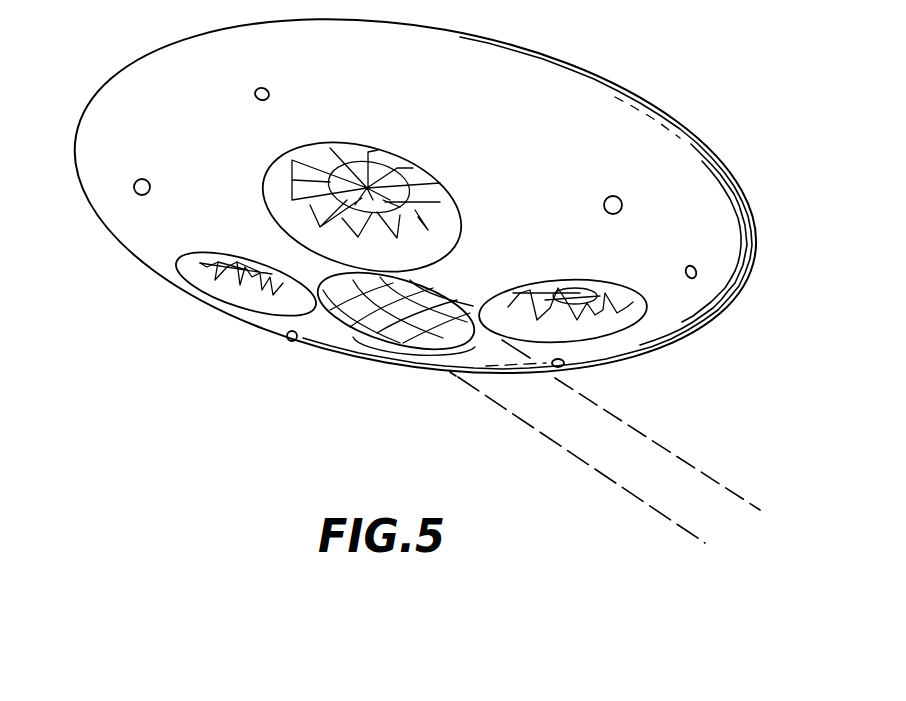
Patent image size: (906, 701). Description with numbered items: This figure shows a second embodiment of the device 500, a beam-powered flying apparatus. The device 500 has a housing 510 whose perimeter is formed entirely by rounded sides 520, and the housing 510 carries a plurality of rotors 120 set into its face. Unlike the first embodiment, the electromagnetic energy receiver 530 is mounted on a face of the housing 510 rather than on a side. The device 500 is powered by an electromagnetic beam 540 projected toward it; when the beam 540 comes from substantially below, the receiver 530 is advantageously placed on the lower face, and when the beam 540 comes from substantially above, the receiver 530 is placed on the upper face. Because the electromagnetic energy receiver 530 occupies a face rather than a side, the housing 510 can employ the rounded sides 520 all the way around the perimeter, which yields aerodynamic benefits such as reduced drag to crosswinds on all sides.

The device 500 is at (127, 453).
The housing 510 is at (150, 96).
The rounded sides 520 is at (693, 129).
The rotors 120 is at (223, 290).
The electromagnetic energy receiver 530 is at (350, 327).
The electromagnetic beam 540 is at (595, 486).